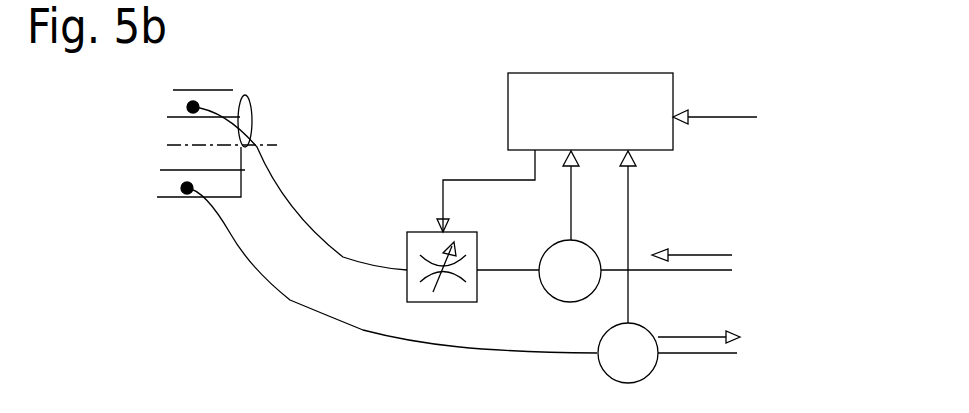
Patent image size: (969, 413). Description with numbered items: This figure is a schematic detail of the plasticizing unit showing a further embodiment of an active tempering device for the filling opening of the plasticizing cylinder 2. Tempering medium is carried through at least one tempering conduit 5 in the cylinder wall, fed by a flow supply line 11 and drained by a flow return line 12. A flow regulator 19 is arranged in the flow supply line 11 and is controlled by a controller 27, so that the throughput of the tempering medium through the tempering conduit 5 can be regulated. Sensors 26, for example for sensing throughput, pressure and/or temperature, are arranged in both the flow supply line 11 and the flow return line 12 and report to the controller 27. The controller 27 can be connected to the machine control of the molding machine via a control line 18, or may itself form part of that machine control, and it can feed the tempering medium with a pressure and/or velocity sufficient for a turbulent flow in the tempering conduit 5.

The plasticizing cylinder 2 is at (228, 99).
The tempering conduit 5 is at (193, 107).
The flow supply line 11 is at (722, 272).
The flow return line 12 is at (708, 353).
The control line 18 is at (725, 112).
The flow regulator 19 is at (418, 232).
The sensor 26 is at (598, 267).
The controller 27 is at (590, 111).